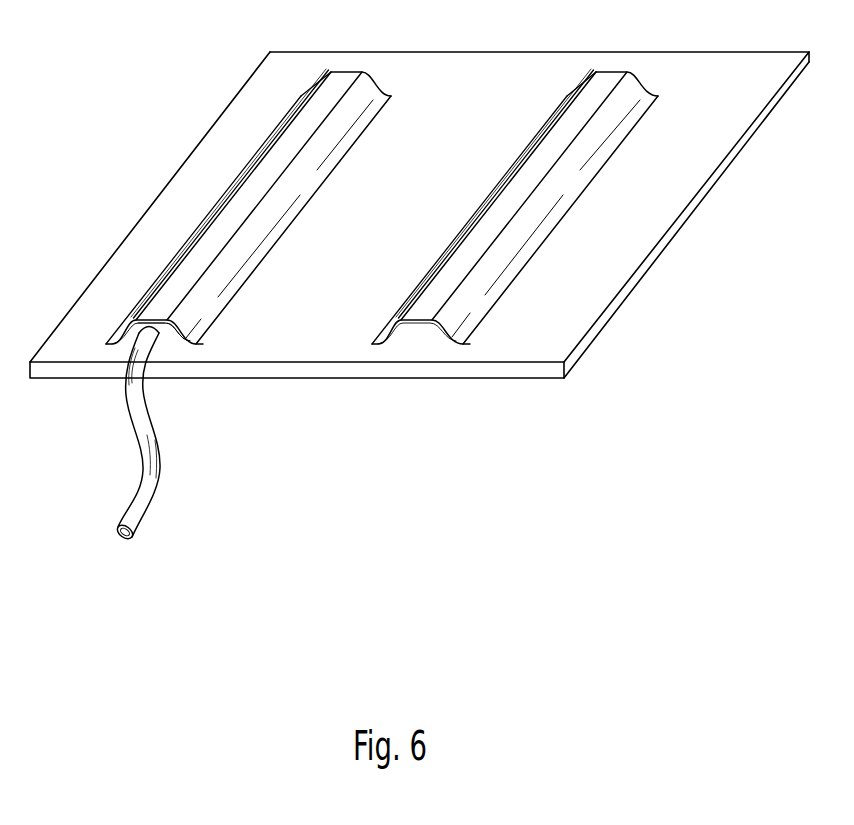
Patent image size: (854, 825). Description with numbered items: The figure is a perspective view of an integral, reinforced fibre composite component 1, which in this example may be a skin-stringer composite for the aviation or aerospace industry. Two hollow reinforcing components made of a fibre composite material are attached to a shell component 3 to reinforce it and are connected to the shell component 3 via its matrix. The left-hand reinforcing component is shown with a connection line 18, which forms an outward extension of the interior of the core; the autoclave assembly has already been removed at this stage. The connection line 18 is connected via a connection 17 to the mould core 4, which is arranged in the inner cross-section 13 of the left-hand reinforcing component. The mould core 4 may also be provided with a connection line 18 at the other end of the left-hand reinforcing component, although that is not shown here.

The fibre composite component 1 is at (168, 62).
The shell component 3 is at (588, 290).
The mould core 4 is at (170, 331).
The inner cross-section 13 is at (173, 345).
The connection 17 is at (131, 322).
The connection line 18 is at (137, 515).